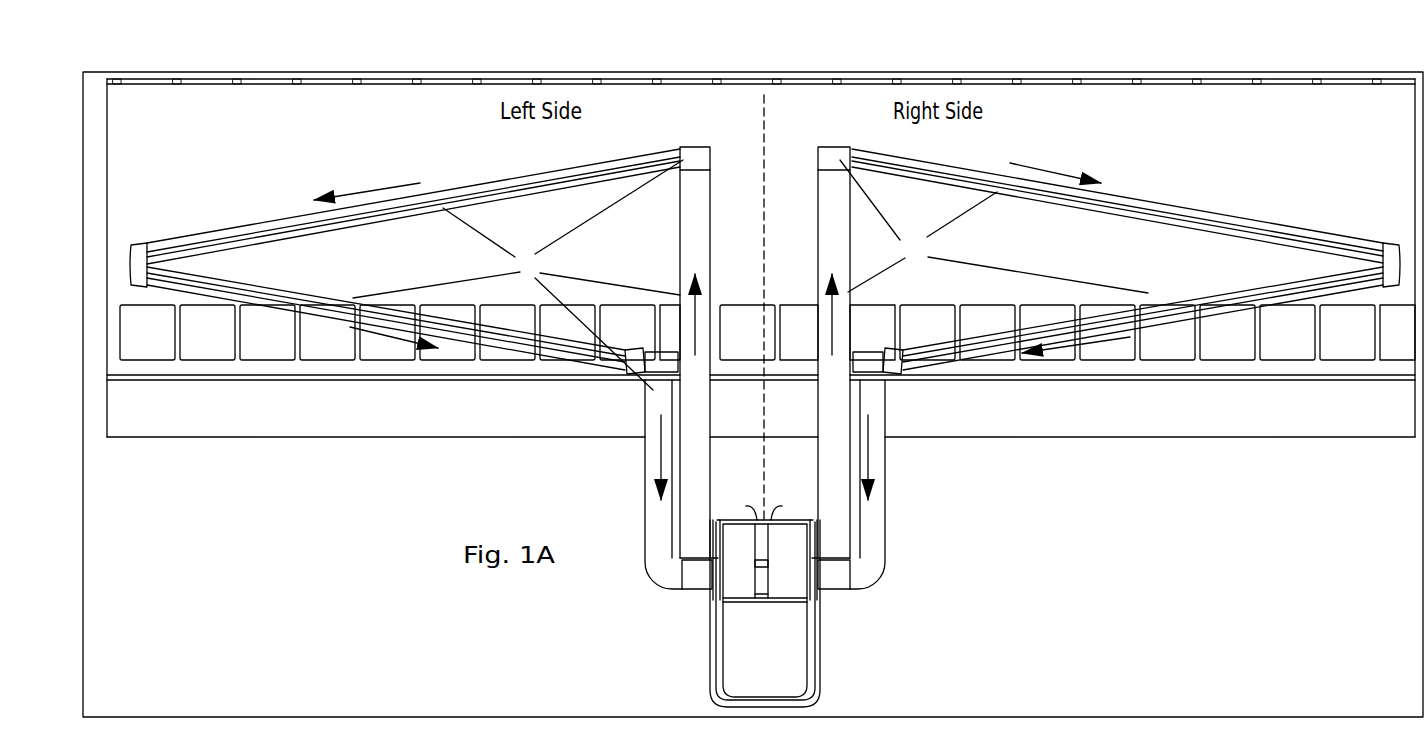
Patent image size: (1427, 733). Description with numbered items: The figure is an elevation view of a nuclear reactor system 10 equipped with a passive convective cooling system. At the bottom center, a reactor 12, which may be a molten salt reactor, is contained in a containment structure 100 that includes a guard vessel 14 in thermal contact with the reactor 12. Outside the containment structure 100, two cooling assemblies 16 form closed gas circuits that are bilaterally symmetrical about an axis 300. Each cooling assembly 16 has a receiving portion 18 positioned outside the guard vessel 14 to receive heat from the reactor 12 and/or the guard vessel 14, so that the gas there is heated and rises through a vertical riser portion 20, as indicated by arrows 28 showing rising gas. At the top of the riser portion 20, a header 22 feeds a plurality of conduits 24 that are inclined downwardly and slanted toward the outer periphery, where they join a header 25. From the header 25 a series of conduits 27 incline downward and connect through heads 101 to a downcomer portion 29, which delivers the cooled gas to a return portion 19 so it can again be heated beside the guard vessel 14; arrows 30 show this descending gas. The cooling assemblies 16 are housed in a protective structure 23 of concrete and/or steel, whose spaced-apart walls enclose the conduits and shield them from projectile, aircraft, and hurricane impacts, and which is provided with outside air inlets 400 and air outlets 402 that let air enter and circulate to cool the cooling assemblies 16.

The nuclear reactor system 10 is at (365, 148).
The reactor 12 is at (765, 601).
The guard vessel 14 is at (802, 688).
The cooling assemblies 16 is at (750, 275).
The receiving portion 18 is at (842, 533).
The return portion 19 is at (697, 575).
The riser portion 20 is at (688, 250).
The header 22 is at (692, 157).
The protective structure 23 is at (243, 80).
The plurality of conduits 24 is at (466, 192).
The header 25 is at (142, 262).
The series of conduits 27 is at (283, 295).
The arrows 28 is at (697, 298).
The downcomer portion 29 is at (650, 500).
The arrows 30 is at (343, 194).
The containment structure 100 is at (718, 627).
The heads 101 is at (764, 360).
The axis 300 is at (765, 160).
The outside air inlets 400 is at (1230, 347).
The air outlets 402 is at (918, 78).